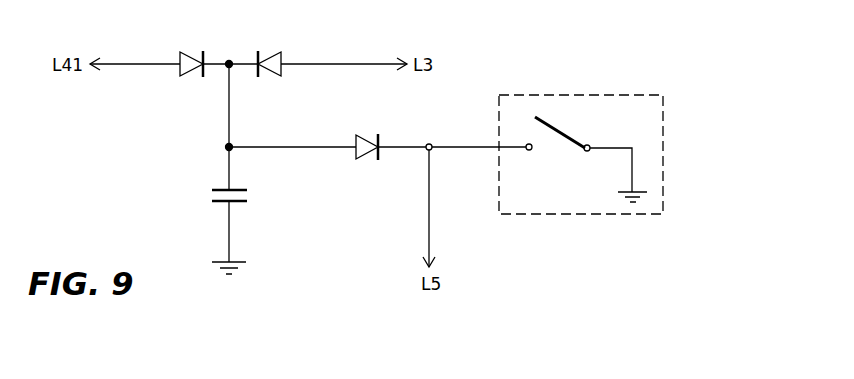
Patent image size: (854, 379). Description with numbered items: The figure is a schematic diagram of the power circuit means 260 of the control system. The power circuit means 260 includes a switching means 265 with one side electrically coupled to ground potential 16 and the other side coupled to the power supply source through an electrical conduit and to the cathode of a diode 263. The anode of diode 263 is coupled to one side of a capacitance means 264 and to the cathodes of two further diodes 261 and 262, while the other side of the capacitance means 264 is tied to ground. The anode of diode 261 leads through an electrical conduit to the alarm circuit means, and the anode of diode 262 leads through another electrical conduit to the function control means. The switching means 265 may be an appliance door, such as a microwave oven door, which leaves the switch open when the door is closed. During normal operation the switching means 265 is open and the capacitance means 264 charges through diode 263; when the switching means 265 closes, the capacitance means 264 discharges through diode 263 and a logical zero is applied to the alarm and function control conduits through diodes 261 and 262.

The ground potential 16 is at (620, 193).
The power circuit means 260 is at (543, 78).
The diode 261 is at (193, 52).
The diode 262 is at (272, 50).
The diode 263 is at (368, 159).
The capacitance means 264 is at (215, 188).
The switching means 265 is at (663, 175).